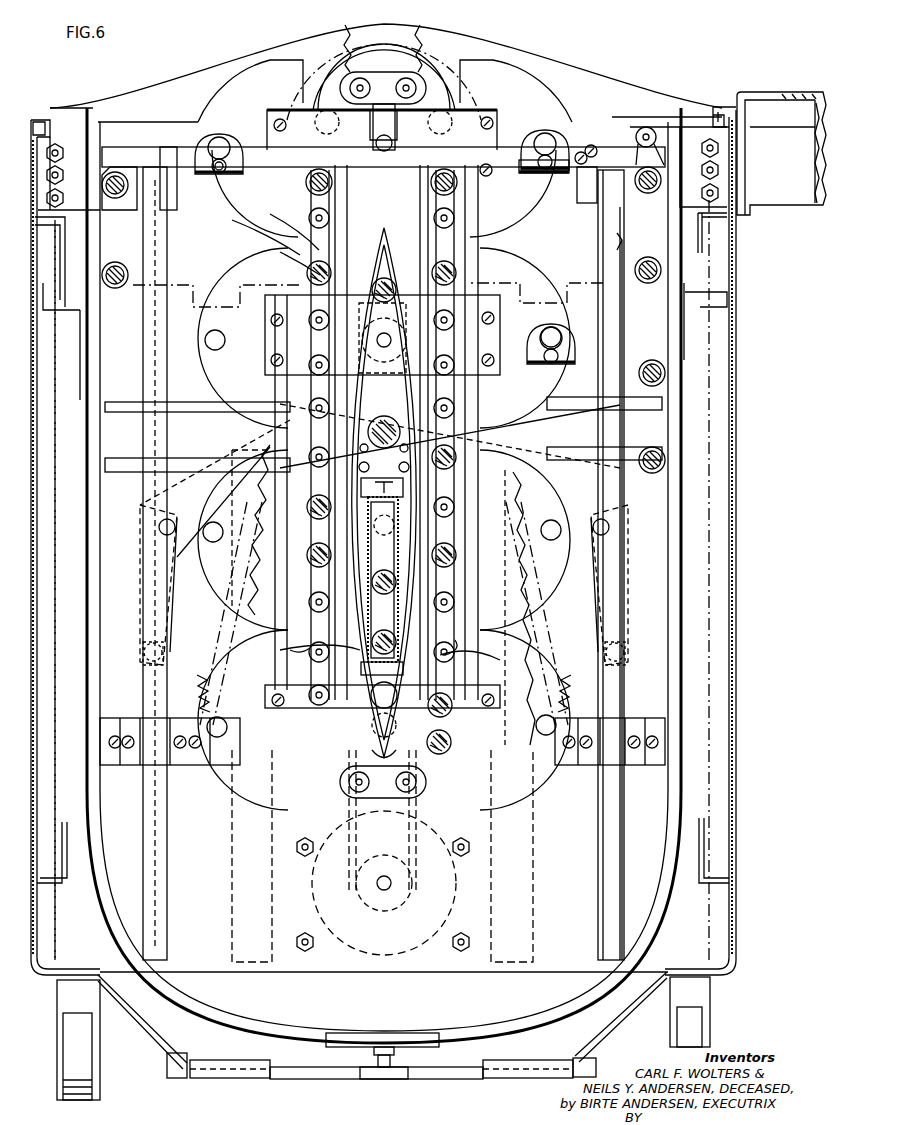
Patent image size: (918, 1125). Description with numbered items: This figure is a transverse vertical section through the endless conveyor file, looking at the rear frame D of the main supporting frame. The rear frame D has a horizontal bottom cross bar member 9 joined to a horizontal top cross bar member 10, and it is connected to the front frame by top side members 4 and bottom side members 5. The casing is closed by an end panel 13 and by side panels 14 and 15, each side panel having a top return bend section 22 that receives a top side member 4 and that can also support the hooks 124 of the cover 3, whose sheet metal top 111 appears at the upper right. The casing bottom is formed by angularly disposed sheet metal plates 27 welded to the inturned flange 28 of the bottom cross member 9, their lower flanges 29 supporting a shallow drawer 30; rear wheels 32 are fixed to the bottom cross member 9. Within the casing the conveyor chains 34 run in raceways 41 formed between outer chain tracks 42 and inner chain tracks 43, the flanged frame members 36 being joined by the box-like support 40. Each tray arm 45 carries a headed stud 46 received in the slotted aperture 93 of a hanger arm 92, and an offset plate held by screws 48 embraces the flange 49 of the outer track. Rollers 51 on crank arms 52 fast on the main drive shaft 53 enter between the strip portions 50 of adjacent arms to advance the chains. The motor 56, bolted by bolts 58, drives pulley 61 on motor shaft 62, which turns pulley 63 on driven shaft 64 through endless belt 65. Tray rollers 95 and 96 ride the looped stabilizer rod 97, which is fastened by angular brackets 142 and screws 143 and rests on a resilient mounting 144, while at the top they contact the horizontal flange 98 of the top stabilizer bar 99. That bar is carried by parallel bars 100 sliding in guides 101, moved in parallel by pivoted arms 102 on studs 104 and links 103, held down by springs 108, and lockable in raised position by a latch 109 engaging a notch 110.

The rear frame D is at (203, 72).
The cover 3 is at (770, 92).
The top side members 4 is at (66, 250).
The bottom side members 5 is at (68, 865).
The horizontal bottom cross bar member 9 is at (73, 725).
The horizontal top cross bar member 10 is at (190, 117).
The end panel 13 is at (200, 611).
The side panel 14 is at (31, 815).
The side panel 15 is at (736, 770).
The return bend section 22 is at (35, 118).
The sheet metal plates 27 is at (145, 1030).
The inturned flange 28 is at (318, 1079).
The outwardly disposed flange 29 is at (175, 1078).
The shallow tray or drawer 30 is at (240, 1078).
The wheels 32 is at (63, 1093).
The conveyor chains 34 is at (390, 72).
The flanged parallel frame members 36 is at (378, 262).
The box-like sheet metal support 40 is at (382, 607).
The groove or raceway 41 is at (318, 525).
The outer chain track 42 is at (520, 672).
The inner chain track 43 is at (312, 610).
The tray arms 45 is at (250, 118).
The headed stud 46 is at (208, 348).
The screws 48 is at (490, 115).
The flange 49 is at (280, 252).
The strip portions 50 is at (470, 110).
The rollers 51 is at (384, 352).
The crank arms 52 is at (410, 345).
The main drive shaft 53 is at (384, 460).
The motor 56 is at (410, 945).
The bolts 58 is at (302, 932).
The pulley 61 is at (405, 888).
The motor shaft 62 is at (378, 890).
The pulley 63 is at (460, 639).
The driven shaft 64 is at (296, 650).
The endless belt 65 is at (416, 810).
The hanger arms 92 is at (203, 148).
The slotted aperture 93 is at (226, 172).
The rollers 95 is at (652, 449).
The rollers 96 is at (115, 198).
The looped stabilizer rod 97 is at (93, 550).
The horizontal flange 98 is at (120, 167).
The top stabilizer bar 99 is at (588, 147).
The bars 100 is at (168, 260).
The guides 101 is at (170, 205).
The pivoted arms 102 is at (280, 440).
The links 103 is at (158, 575).
The studs 104 is at (260, 418).
The springs 108 is at (197, 680).
The latch 109 is at (644, 127).
The notch 110 is at (624, 242).
The sheet metal top 111 is at (800, 92).
The hooks 124 is at (716, 107).
The angular brackets 142 is at (78, 330).
The screws 143 is at (62, 305).
The resilient mounting 144 is at (394, 1052).